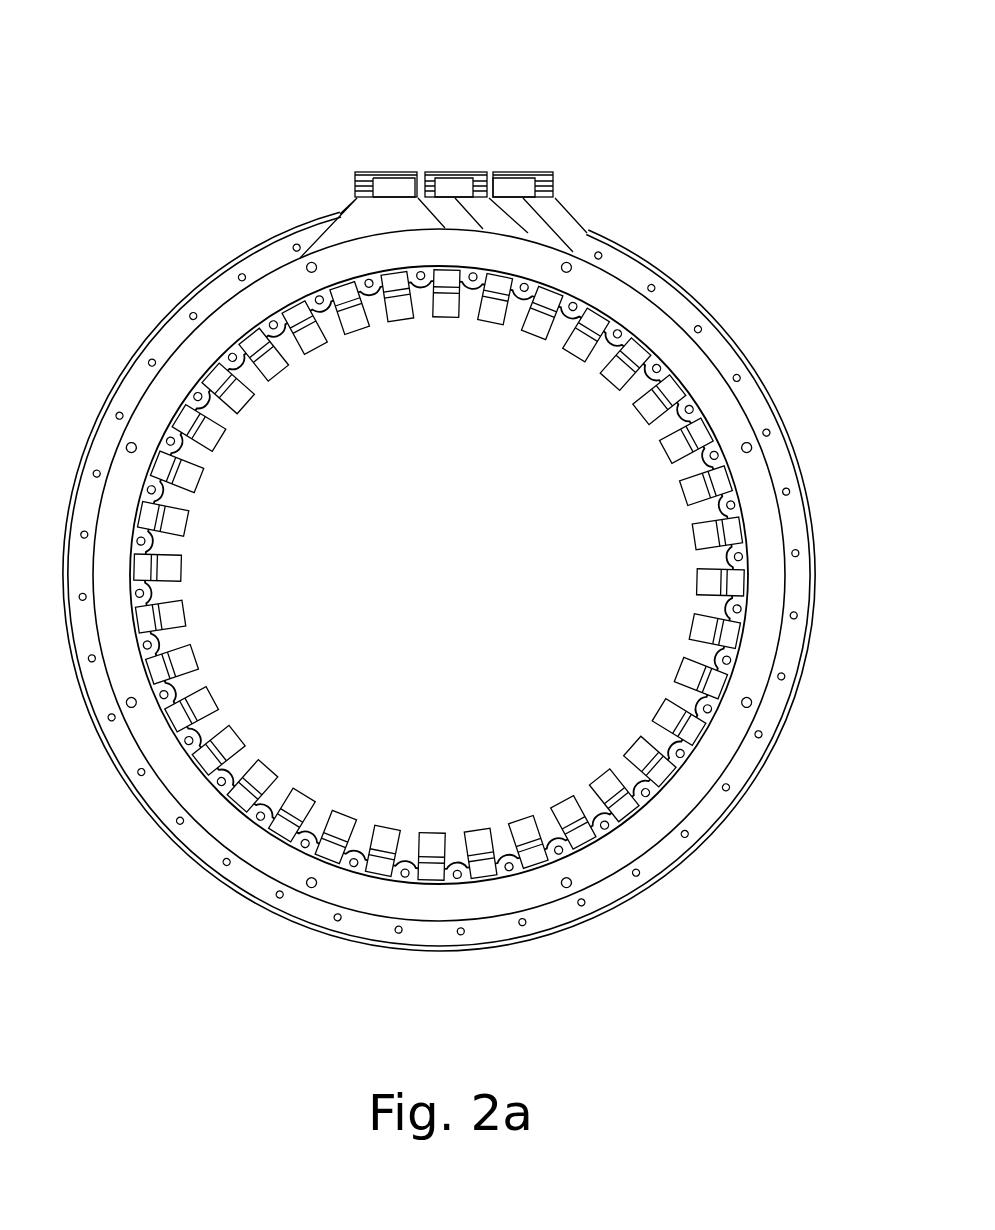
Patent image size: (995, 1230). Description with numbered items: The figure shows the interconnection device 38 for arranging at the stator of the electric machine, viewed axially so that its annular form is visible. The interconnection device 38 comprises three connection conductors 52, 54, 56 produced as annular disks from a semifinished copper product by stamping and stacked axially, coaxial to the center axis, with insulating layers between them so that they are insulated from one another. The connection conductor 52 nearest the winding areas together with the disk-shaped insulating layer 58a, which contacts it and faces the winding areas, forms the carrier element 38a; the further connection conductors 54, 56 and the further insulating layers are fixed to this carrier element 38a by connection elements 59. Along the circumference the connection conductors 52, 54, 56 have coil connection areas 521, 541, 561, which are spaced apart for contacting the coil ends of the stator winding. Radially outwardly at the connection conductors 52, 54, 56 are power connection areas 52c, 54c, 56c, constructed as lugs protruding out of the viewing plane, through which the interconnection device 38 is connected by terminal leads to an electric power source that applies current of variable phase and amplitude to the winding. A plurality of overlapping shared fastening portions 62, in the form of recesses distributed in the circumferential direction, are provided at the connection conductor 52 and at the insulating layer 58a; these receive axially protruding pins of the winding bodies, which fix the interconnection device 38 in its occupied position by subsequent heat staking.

The interconnection device 38 is at (668, 247).
The carrier element 38a is at (671, 303).
The connection conductor 52 is at (553, 215).
The power connection area 52c is at (522, 172).
The connection conductor 54 is at (483, 213).
The power connection area 54c is at (445, 172).
The connection conductor 56 is at (370, 222).
The power connection area 56c is at (372, 172).
The insulating layer 58a is at (787, 440).
The connection element 59 is at (752, 706).
The fastening portion 62 is at (233, 778).
The coil connection area 521 is at (640, 415).
The coil connection area 541 is at (607, 382).
The coil connection area 561 is at (571, 357).